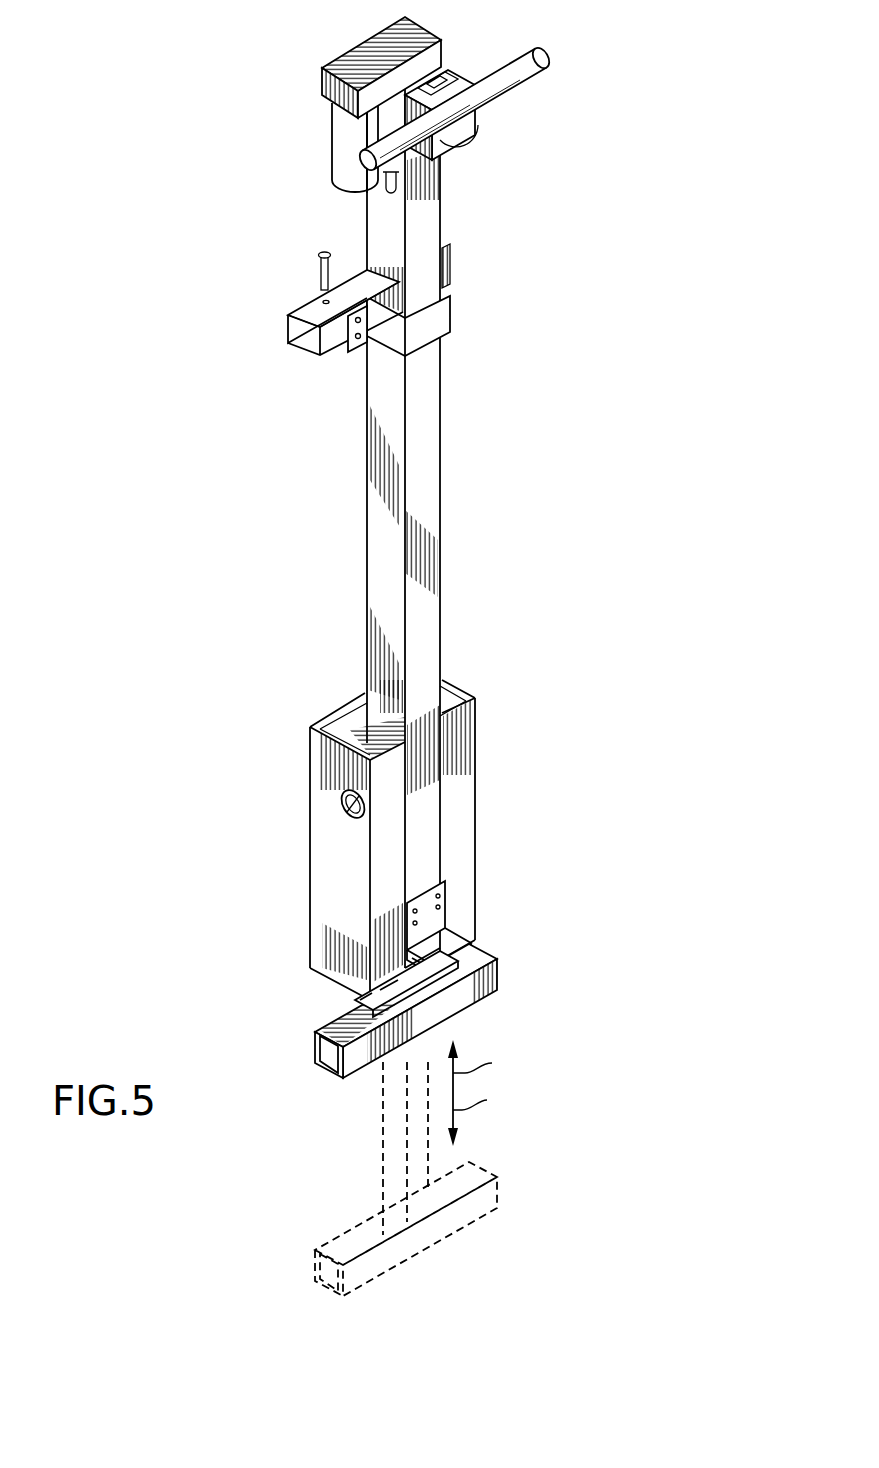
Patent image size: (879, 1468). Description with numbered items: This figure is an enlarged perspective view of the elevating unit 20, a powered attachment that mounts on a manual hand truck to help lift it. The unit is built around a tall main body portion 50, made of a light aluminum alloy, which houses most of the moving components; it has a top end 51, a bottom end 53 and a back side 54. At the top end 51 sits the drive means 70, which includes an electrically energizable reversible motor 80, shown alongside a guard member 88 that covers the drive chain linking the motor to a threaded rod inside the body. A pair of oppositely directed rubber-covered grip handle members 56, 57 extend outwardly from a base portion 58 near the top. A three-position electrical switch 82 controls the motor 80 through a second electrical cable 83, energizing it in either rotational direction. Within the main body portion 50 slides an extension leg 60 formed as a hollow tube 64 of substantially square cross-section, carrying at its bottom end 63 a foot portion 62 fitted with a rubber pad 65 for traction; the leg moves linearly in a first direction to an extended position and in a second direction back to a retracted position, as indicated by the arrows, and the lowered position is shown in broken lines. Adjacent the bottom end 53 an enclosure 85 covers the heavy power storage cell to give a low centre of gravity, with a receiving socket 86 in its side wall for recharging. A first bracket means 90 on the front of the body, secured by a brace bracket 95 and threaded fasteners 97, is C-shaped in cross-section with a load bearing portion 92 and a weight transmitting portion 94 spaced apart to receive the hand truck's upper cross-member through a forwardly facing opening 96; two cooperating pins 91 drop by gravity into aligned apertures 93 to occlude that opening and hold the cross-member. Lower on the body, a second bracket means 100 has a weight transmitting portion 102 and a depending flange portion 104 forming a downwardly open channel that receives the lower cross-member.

The elevating unit 20 is at (242, 514).
The main body portion 50 is at (425, 424).
The top end 51 is at (397, 112).
The bottom end 53 is at (367, 1005).
The back side 54 is at (425, 548).
The grip handle member 56 is at (438, 156).
The grip handle member 57 is at (532, 72).
The base portion 58 is at (470, 124).
The extension leg 60 is at (443, 1014).
The foot portion 62 is at (353, 1032).
The bottom end 63 is at (427, 988).
The hollow tube 64 is at (397, 1181).
The rubber pad 65 is at (362, 1060).
The drive means 70 is at (292, 126).
The reversible motor 80 is at (356, 163).
The three-position electrical switch 82 is at (438, 74).
The second electrical cable 83 is at (392, 192).
The enclosure 85 is at (356, 849).
The receiving socket 86 is at (338, 806).
The guard member 88 is at (362, 66).
The first bracket means 90 is at (295, 344).
The pins 91 is at (320, 278).
The load bearing portion 92 is at (309, 366).
The apertures 93 is at (326, 301).
The weight transmitting portion 94 is at (306, 312).
The brace bracket 95 is at (432, 314).
The forwardly facing opening 96 is at (288, 329).
The threaded fasteners 97 is at (362, 337).
The second bracket means 100 is at (447, 914).
The weight transmitting portion 102 is at (453, 928).
The flange portion 104 is at (467, 936).